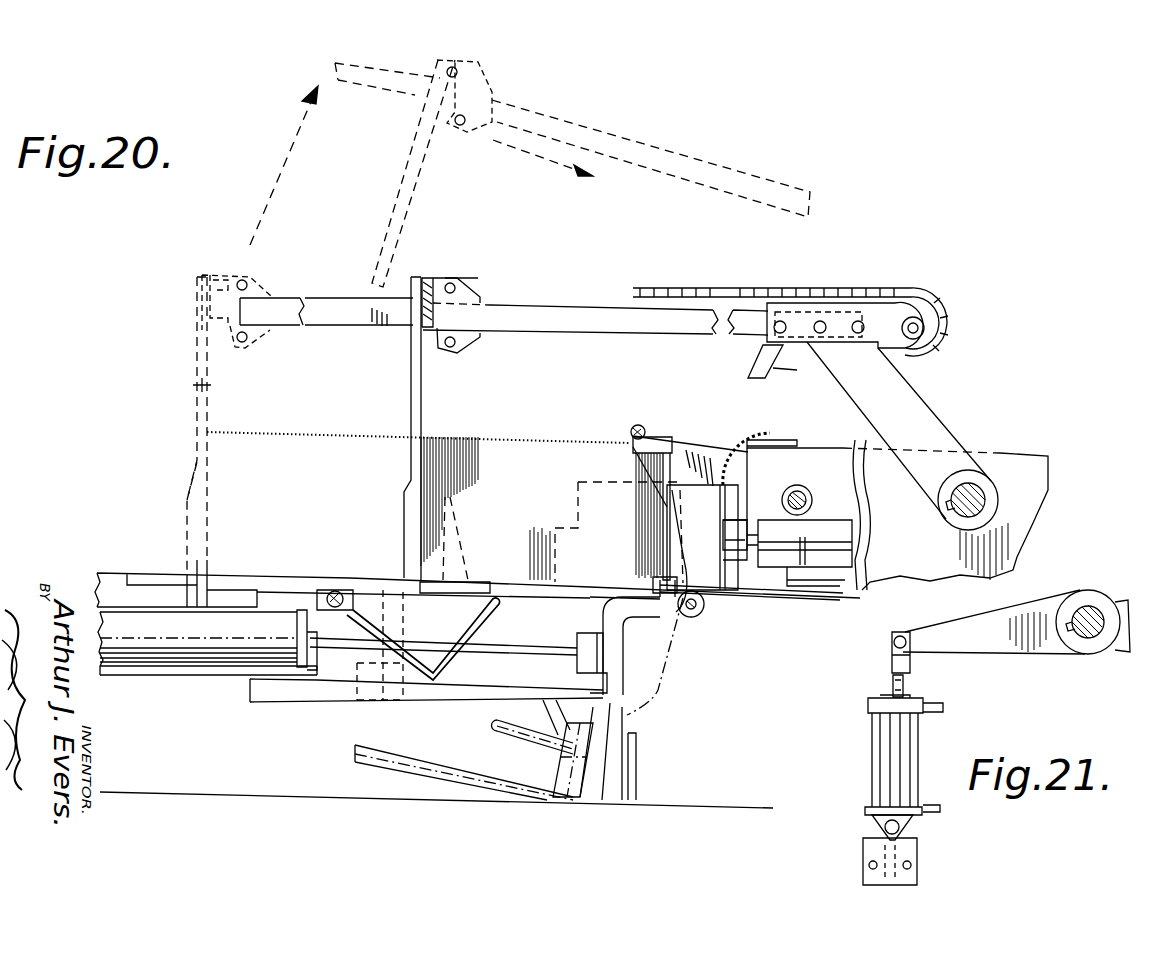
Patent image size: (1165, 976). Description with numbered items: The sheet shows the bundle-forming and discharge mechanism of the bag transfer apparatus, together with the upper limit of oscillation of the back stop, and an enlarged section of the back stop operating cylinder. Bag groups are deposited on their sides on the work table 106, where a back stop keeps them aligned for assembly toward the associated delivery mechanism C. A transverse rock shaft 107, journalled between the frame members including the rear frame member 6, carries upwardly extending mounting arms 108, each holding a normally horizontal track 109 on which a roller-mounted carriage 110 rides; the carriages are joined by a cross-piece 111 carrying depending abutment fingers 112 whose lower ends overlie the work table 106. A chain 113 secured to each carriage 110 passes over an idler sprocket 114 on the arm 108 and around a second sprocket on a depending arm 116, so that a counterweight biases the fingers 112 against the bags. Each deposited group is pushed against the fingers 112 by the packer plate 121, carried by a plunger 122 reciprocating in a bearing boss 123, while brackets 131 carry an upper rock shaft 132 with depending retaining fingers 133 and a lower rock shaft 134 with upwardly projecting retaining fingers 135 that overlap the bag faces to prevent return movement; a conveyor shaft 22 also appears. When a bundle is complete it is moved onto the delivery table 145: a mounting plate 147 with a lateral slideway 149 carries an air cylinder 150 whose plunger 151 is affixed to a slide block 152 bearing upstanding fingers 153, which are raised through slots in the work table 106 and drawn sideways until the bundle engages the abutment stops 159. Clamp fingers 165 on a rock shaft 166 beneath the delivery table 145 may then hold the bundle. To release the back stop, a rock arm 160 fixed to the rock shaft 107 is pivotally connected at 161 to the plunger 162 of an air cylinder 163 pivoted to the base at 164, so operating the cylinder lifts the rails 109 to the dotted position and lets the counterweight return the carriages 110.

In FIG. 20, the rear frame member 6 is at (858, 452).
In FIG. 20, the transversely disposed shaft 22 is at (812, 495).
In FIG. 20, the work table 106 is at (517, 582).
In FIG. 20, the rock shaft 107 is at (985, 503).
In FIG. 21, the rock shaft 107 is at (1097, 642).
In FIG. 20, the mounting arm 108 is at (907, 397).
In FIG. 20, the track 109 is at (695, 157).
In FIG. 20, the carriage 110 is at (498, 84).
In FIG. 20, the cross-piece 111 is at (455, 250).
In FIG. 20, the abutment finger 112 is at (398, 166).
In FIG. 20, the chain 113 is at (738, 290).
In FIG. 20, the idler sprocket 114 is at (945, 320).
In FIG. 20, the depending arm 116 is at (787, 371).
In FIG. 20, the packer plate 121 is at (717, 580).
In FIG. 20, the plunger 122 is at (783, 472).
In FIG. 20, the bearing boss 123 is at (835, 540).
In FIG. 20, the bracket 131 is at (700, 440).
In FIG. 20, the upper rock shaft 132 is at (638, 425).
In FIG. 20, the retaining finger 133 is at (660, 435).
In FIG. 20, the lower rock shaft 134 is at (700, 613).
In FIG. 20, the retaining finger 135 is at (653, 582).
In FIG. 20, the delivery table 145 is at (268, 577).
In FIG. 20, the mounting plate 147 is at (145, 675).
In FIG. 20, the slideway 149 is at (457, 740).
In FIG. 20, the air cylinder 150 is at (190, 648).
In FIG. 20, the plunger 151 is at (548, 668).
In FIG. 20, the slide block 152 is at (358, 702).
In FIG. 20, the finger 153 is at (455, 520).
In FIG. 20, the abutment stop 159 is at (188, 516).
In FIG. 21, the rock arm 160 is at (1040, 650).
In FIG. 21, the pivotal connection 161 is at (895, 632).
In FIG. 21, the plunger 162 is at (905, 693).
In FIG. 21, the air cylinder 163 is at (888, 778).
In FIG. 21, the pivotal connection 164 is at (903, 827).
In FIG. 20, the clamp finger 165 is at (495, 605).
In FIG. 20, the rock shaft 166 is at (335, 583).
In FIG. 20, the delivery mechanism C is at (318, 718).